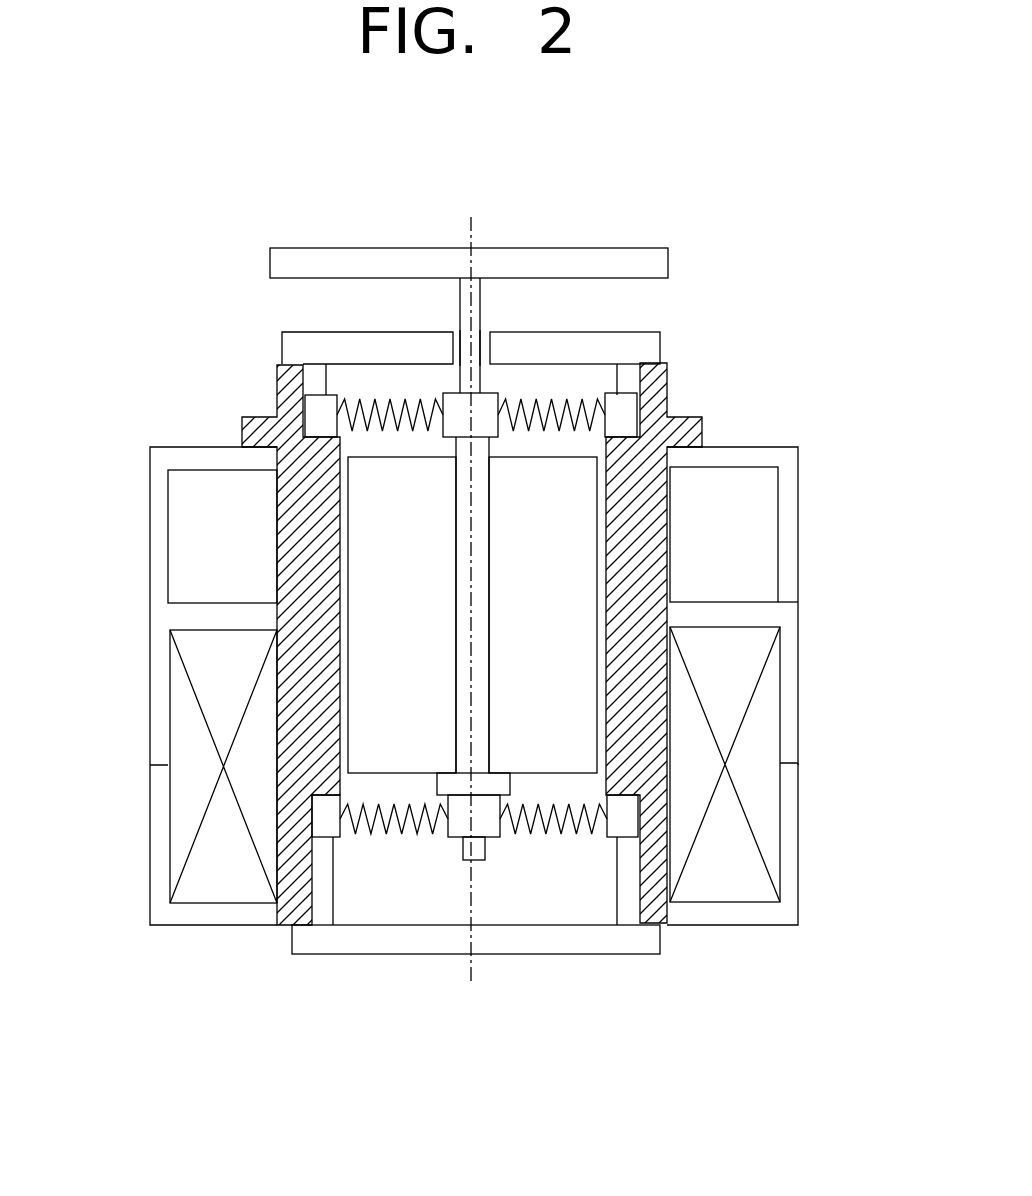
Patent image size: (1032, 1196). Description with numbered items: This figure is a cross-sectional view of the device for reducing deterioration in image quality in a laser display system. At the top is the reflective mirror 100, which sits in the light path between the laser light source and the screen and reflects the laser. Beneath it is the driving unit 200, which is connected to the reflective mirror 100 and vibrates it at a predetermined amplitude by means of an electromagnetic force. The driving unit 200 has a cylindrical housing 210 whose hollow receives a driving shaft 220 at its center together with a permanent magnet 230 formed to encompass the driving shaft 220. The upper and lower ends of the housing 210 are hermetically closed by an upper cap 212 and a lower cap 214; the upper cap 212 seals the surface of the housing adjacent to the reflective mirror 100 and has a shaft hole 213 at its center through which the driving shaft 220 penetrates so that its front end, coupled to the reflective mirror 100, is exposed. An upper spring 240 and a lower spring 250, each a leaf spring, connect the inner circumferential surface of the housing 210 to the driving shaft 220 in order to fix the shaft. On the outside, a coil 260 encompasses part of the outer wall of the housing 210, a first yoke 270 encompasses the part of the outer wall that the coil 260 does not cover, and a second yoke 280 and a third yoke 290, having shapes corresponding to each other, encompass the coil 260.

The reflective mirror 100 is at (660, 262).
The driving unit 200 is at (806, 444).
The housing 210 is at (290, 612).
The upper cap 212 is at (653, 343).
The shaft hole 213 is at (483, 333).
The lower cap 214 is at (552, 955).
The driving shaft 220 is at (460, 508).
The permanent magnet 230 is at (373, 552).
The upper spring 240 is at (630, 408).
The lower spring 250 is at (327, 840).
The coil 260 is at (182, 807).
The first yoke 270 is at (160, 578).
The second yoke 280 is at (160, 657).
The third yoke 290 is at (160, 866).